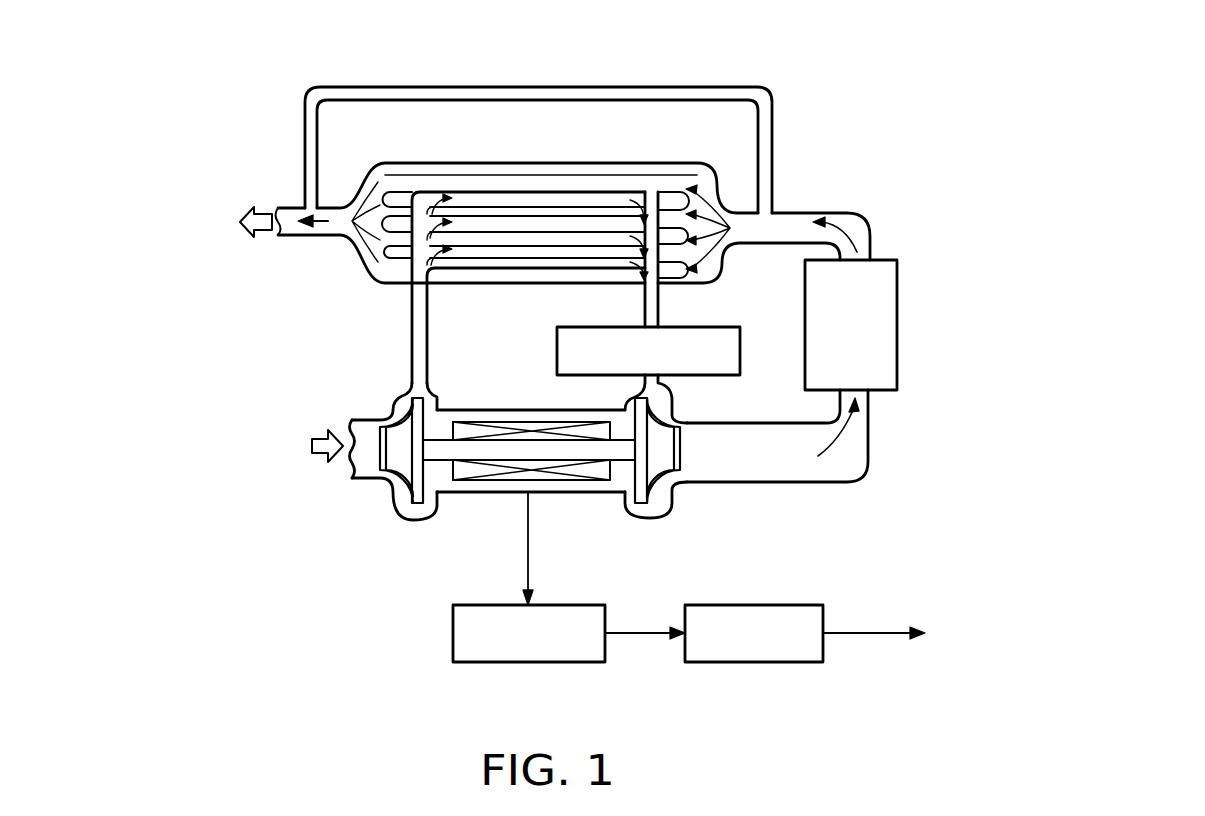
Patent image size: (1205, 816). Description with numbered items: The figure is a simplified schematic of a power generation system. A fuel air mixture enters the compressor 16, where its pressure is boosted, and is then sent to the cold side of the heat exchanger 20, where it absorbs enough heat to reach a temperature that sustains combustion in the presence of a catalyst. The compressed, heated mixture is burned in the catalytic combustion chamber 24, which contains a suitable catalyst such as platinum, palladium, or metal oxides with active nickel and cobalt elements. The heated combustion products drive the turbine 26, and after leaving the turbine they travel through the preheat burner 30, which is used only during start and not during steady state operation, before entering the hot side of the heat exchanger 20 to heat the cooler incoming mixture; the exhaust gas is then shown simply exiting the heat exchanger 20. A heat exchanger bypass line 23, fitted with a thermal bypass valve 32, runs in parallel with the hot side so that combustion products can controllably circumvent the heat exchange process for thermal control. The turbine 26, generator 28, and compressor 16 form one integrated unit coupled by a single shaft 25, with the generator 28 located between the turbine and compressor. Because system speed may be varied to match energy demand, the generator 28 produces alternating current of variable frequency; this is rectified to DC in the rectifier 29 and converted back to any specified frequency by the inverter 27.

The compressor 16 is at (400, 385).
The heat exchanger 20 is at (700, 163).
The heat exchanger bypass line 23 is at (432, 86).
The combustion chamber 24 is at (720, 326).
The shaft 25 is at (440, 433).
The turbine 26 is at (637, 505).
The inverter 27 is at (733, 663).
The generator 28 is at (495, 483).
The rectifier 29 is at (537, 665).
The preheat burner 30 is at (897, 331).
The thermal bypass valve 32 is at (536, 99).